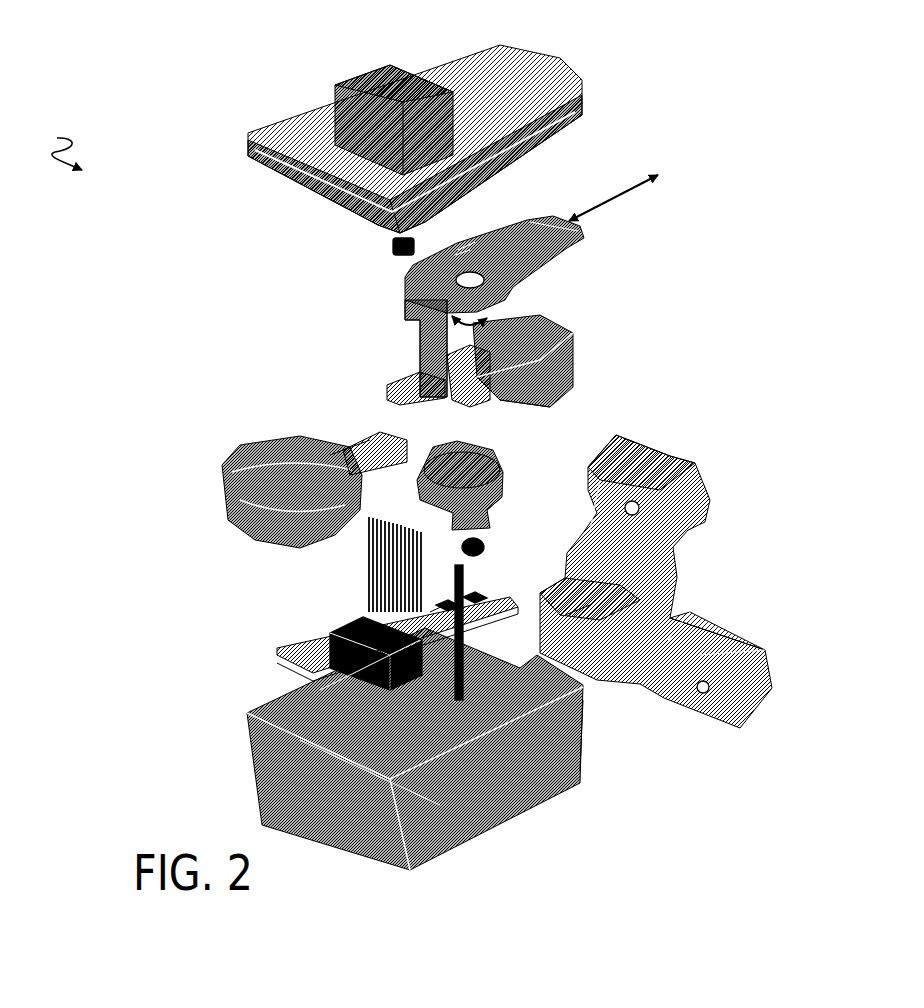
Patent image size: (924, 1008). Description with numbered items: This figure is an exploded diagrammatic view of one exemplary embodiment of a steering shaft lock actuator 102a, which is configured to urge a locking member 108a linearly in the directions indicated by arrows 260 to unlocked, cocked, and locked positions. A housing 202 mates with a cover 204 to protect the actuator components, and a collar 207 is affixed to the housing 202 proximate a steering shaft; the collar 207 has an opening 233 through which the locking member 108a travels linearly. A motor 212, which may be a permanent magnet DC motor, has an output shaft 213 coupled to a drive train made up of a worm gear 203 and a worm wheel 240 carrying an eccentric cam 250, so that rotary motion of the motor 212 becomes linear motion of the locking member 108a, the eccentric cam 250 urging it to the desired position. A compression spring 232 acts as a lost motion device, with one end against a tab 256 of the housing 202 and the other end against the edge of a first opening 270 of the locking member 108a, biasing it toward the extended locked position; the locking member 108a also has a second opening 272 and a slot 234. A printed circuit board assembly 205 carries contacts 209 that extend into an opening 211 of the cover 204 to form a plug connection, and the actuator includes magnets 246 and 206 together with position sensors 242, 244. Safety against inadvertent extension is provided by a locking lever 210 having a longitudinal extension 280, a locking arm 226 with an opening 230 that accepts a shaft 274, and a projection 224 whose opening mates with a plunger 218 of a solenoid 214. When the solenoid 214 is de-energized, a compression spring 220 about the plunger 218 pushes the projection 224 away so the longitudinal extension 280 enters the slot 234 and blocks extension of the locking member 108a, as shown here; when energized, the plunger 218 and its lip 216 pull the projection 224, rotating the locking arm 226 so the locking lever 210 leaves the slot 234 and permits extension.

The steering shaft lock actuator 102a is at (55, 144).
The locking member 108a is at (583, 232).
The housing 202 is at (578, 785).
The worm gear 203 is at (372, 440).
The cover 204 is at (575, 68).
The printed circuit board (PCB) assembly 205 is at (300, 634).
The magnet 206 is at (392, 243).
The collar 207 is at (776, 668).
The contacts 209 is at (365, 562).
The locking lever 210 is at (412, 336).
The opening 211 is at (374, 80).
The motor 212 is at (255, 445).
The output shaft 213 is at (352, 450).
The solenoid 214 is at (580, 343).
The lip 216 is at (460, 408).
The plunger 218 is at (500, 402).
The compression spring 220 is at (503, 325).
The projection 224 is at (425, 352).
The locking arm 226 is at (408, 283).
The opening 230 is at (465, 245).
The compression spring 232 is at (532, 220).
The opening 233 is at (579, 620).
The slot 234 is at (410, 302).
The worm wheel 240 is at (503, 466).
The position sensor 242 is at (442, 600).
The position sensor 244 is at (475, 596).
The magnet 246 is at (485, 537).
The eccentric cam 250 is at (508, 497).
The tab 256 is at (583, 718).
The arrows 260 is at (634, 190).
The first opening 270 is at (523, 292).
The second opening 272 is at (463, 240).
The shaft 274 is at (466, 575).
The longitudinal extension 280 is at (420, 352).